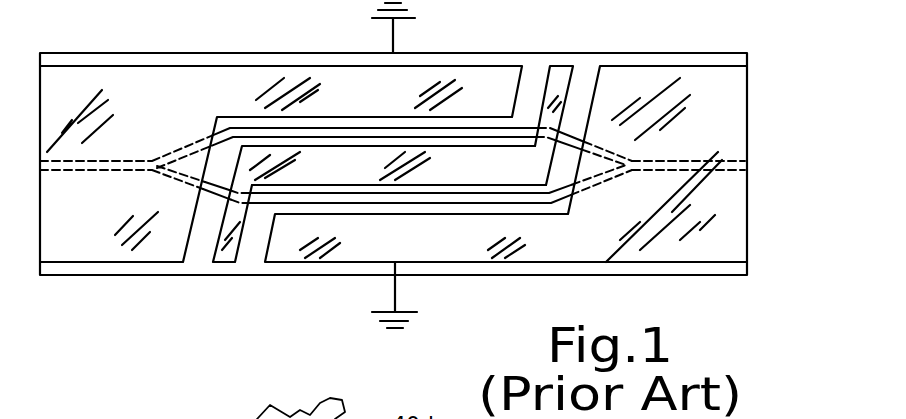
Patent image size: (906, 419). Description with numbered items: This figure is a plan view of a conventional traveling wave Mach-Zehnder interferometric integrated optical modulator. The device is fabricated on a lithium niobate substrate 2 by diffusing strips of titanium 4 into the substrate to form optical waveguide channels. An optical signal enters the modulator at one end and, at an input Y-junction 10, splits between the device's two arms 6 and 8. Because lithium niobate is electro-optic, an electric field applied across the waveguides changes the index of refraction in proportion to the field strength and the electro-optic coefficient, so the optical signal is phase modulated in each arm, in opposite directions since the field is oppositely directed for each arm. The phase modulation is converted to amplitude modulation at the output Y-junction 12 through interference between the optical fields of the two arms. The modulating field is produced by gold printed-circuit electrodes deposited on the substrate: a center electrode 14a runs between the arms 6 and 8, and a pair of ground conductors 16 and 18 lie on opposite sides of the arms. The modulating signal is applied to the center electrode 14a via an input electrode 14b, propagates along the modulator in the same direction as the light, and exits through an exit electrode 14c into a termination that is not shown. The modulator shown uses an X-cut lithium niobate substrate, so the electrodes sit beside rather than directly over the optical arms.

The lithium niobate substrate 2 is at (747, 263).
The strips of titanium 4 is at (720, 162).
The arm 6 is at (243, 130).
The arm 8 is at (210, 196).
The input Y-junction 10 is at (626, 166).
The output Y-junction 12 is at (153, 165).
The center electrode 14a is at (363, 172).
The input electrode 14b is at (563, 72).
The exit electrode 14c is at (223, 255).
The ground conductor 16 is at (470, 77).
The ground conductor 18 is at (480, 247).